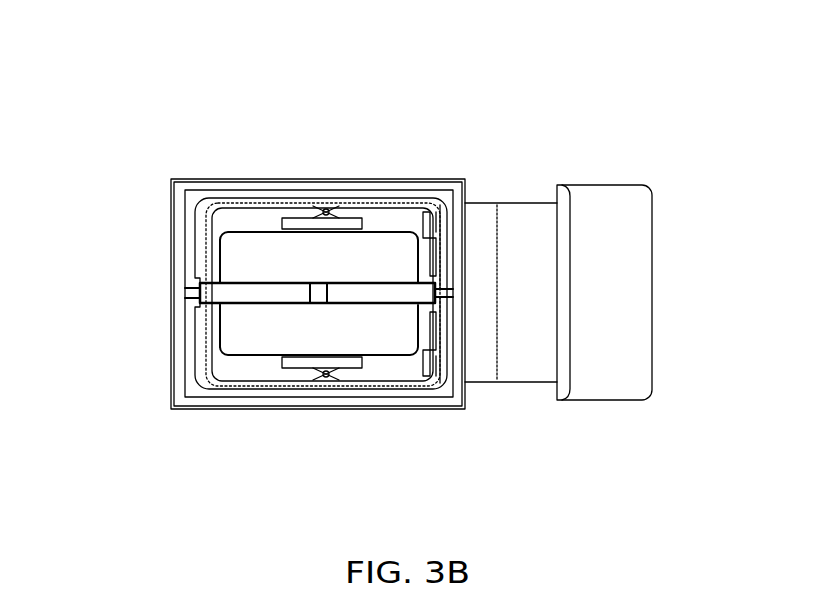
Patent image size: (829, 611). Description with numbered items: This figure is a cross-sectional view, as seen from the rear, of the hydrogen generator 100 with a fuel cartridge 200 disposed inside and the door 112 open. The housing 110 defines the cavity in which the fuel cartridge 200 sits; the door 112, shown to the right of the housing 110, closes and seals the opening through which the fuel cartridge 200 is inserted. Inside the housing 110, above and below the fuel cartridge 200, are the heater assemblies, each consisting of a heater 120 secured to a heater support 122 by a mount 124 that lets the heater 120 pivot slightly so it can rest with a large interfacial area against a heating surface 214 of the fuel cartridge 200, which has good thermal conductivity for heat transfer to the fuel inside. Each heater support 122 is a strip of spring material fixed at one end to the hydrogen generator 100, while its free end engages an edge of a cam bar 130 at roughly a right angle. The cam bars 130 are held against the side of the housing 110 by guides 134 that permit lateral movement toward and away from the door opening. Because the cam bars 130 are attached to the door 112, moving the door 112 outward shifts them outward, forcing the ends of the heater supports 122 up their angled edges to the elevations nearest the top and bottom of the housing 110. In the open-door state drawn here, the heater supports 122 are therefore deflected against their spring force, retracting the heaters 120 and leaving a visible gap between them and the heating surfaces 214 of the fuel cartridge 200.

The hydrogen generator 100 is at (212, 89).
The housing 110 is at (170, 243).
The door 112 is at (600, 186).
The heater 120 is at (295, 220).
The heater support 122 is at (385, 205).
The mount 124 is at (337, 207).
The cam bar 130 is at (433, 221).
The guide 134 is at (433, 222).
The fuel cartridge 200 is at (228, 325).
The heating surface 214 is at (257, 232).